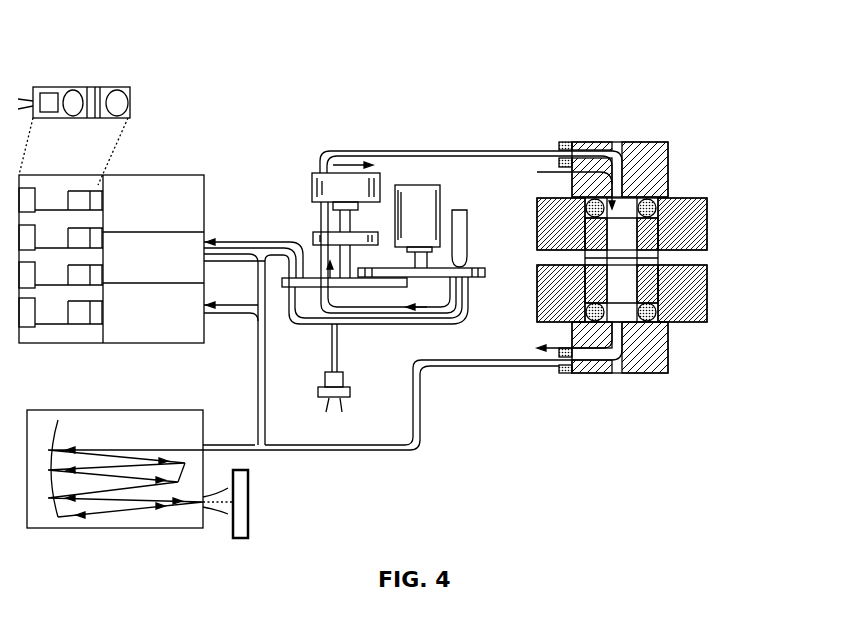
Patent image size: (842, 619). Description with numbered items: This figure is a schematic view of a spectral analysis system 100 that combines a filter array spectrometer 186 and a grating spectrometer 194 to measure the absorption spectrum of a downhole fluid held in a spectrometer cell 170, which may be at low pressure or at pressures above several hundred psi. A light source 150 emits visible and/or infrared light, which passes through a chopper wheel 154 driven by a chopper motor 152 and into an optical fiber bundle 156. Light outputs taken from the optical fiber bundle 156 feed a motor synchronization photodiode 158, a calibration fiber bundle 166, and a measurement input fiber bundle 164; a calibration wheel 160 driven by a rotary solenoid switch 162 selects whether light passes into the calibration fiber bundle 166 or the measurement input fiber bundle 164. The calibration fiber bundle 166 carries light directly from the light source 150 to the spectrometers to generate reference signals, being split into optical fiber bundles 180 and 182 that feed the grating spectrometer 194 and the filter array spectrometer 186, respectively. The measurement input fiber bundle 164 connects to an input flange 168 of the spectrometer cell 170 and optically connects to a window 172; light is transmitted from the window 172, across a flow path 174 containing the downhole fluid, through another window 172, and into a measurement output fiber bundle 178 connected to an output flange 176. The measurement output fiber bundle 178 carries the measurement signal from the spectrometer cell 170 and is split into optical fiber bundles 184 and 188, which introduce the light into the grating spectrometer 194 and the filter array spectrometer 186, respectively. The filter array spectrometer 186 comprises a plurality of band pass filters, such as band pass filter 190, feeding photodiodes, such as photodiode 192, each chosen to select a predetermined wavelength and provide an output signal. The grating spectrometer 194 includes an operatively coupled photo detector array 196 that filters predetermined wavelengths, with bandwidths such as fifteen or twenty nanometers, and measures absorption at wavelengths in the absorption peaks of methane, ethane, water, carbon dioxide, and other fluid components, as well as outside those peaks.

The spectral analysis system 100 is at (351, 66).
The light source 150 is at (467, 230).
The chopper motor 152 is at (440, 197).
The chopper wheel 154 is at (480, 280).
The optical fiber bundle 156 is at (448, 317).
The motor synchronization photodiode 158 is at (318, 390).
The calibration wheel 160 is at (310, 260).
The rotary solenoid switch 162 is at (312, 183).
The measurement input fiber bundle 164 is at (393, 150).
The calibration fiber bundle 166 is at (287, 304).
The input flange 168 is at (643, 142).
The spectrometer cell 170 is at (719, 155).
The window 172 is at (628, 277).
The flow path 174 is at (693, 262).
The output flange 176 is at (638, 373).
The measurement output fiber bundle 178 is at (541, 362).
The optical fiber bundle 180 is at (255, 360).
The optical fiber bundle 182 is at (242, 245).
The optical fiber bundle 184 is at (424, 428).
The filter array spectrometer 186 is at (141, 334).
The optical fiber bundle 188 is at (367, 360).
The band pass filter 190 is at (92, 87).
The photodiode 192 is at (50, 93).
The grating spectrometer 194 is at (143, 529).
The photo detector array 196 is at (249, 506).